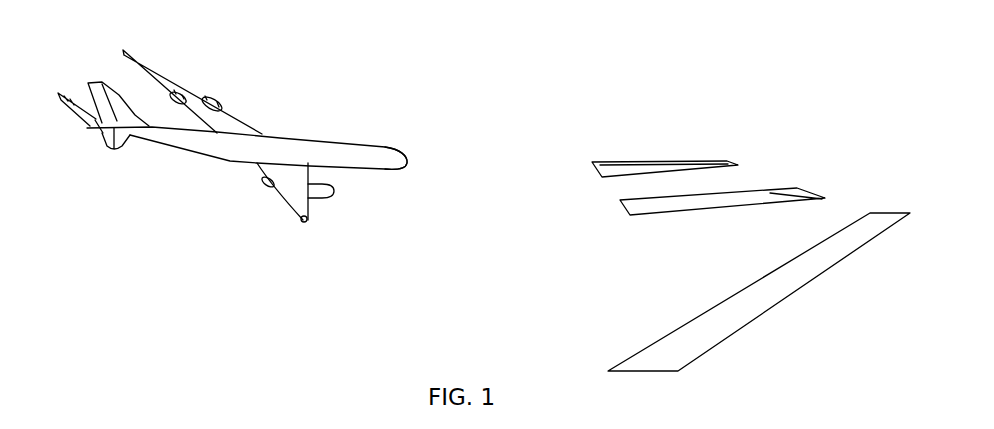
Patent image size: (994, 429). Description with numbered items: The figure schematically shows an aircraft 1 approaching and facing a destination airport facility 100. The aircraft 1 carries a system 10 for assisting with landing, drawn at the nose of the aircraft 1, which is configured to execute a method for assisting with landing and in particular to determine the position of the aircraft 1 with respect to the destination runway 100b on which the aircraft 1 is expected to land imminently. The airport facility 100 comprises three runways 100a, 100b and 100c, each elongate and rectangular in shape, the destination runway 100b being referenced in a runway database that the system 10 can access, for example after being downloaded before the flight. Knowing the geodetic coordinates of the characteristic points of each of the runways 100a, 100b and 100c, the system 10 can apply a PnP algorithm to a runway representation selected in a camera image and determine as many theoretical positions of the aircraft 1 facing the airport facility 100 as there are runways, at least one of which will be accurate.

The aircraft 1 is at (287, 138).
The system for assisting with landing 10 is at (397, 175).
The airport facility 100 is at (716, 80).
The runway 100a is at (628, 162).
The destination runway 100b is at (765, 192).
The runway 100c is at (682, 328).